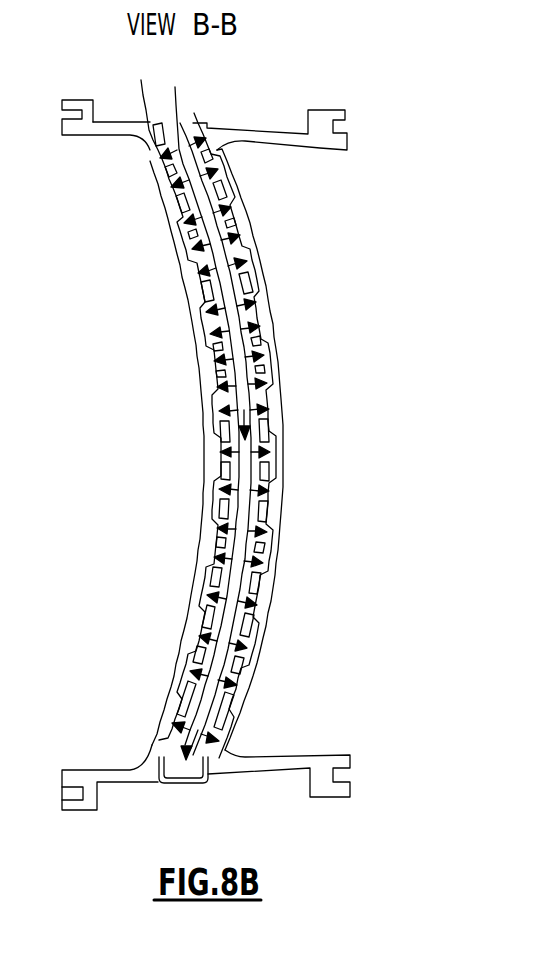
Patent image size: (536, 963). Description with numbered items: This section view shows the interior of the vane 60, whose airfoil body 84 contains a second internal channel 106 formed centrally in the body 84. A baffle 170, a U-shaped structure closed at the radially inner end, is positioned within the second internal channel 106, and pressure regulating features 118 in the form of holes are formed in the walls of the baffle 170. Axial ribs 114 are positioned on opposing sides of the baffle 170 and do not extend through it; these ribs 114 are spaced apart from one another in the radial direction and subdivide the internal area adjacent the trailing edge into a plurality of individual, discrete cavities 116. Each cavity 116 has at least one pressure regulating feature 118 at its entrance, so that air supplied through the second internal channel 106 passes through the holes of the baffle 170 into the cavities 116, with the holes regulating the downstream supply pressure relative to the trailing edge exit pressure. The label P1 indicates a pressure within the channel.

The vane 60 is at (431, 150).
The airfoil body 84 is at (272, 588).
The second internal channel 106 is at (141, 80).
The axial ribs 114 is at (237, 194).
The individual cavities 116 is at (218, 162).
The pressure regulating features 118 is at (270, 490).
The baffle 170 is at (170, 168).
The pressure P1 is at (236, 390).